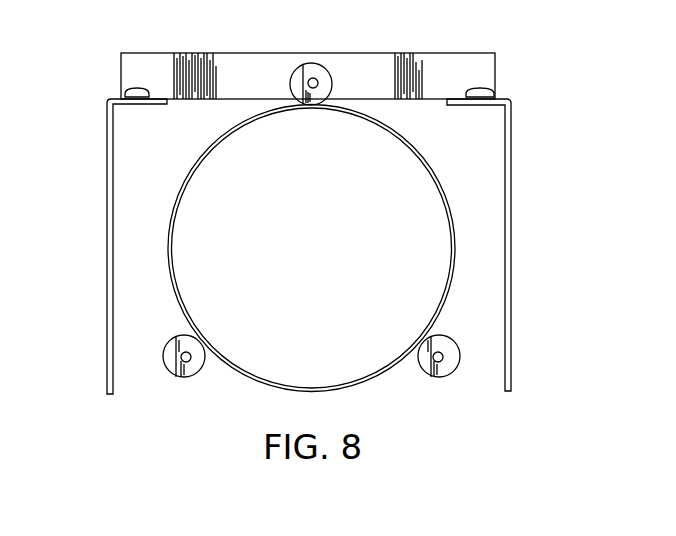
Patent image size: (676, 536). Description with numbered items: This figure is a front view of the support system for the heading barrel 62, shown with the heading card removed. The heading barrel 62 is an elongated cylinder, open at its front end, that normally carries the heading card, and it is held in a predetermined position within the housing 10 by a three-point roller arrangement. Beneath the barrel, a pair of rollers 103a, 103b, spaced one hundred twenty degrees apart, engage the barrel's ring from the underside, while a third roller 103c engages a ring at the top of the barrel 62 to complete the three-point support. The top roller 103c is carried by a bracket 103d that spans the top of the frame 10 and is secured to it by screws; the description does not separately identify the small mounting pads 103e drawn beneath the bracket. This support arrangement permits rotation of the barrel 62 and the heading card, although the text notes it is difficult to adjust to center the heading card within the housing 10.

The housing 10 is at (107, 194).
The heading barrel 62 is at (181, 186).
The roller 103a is at (169, 347).
The roller 103b is at (454, 347).
The third roller 103c is at (302, 67).
The bracket 103d is at (357, 57).
The feet 103e is at (137, 88).